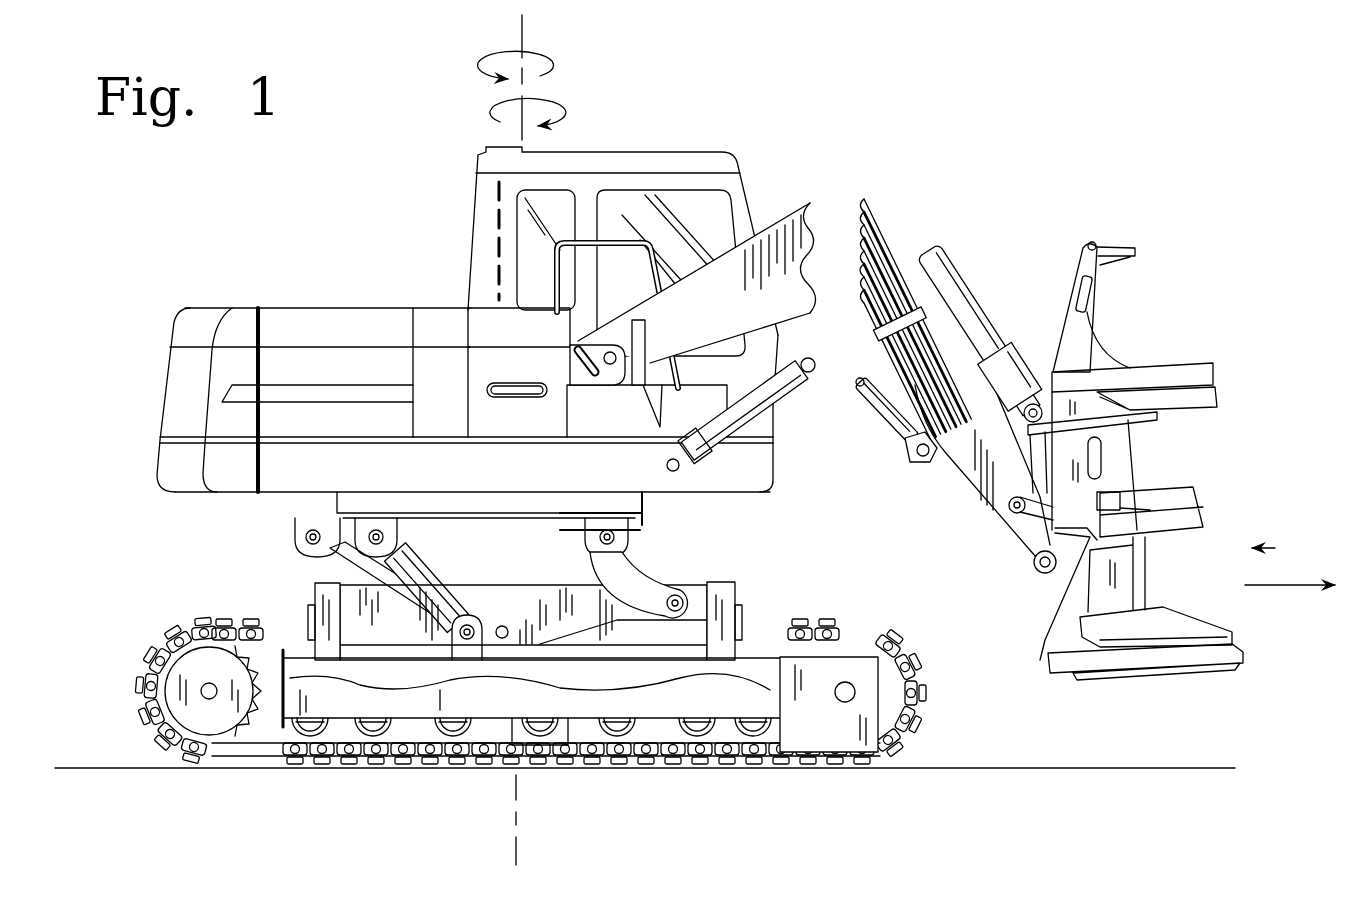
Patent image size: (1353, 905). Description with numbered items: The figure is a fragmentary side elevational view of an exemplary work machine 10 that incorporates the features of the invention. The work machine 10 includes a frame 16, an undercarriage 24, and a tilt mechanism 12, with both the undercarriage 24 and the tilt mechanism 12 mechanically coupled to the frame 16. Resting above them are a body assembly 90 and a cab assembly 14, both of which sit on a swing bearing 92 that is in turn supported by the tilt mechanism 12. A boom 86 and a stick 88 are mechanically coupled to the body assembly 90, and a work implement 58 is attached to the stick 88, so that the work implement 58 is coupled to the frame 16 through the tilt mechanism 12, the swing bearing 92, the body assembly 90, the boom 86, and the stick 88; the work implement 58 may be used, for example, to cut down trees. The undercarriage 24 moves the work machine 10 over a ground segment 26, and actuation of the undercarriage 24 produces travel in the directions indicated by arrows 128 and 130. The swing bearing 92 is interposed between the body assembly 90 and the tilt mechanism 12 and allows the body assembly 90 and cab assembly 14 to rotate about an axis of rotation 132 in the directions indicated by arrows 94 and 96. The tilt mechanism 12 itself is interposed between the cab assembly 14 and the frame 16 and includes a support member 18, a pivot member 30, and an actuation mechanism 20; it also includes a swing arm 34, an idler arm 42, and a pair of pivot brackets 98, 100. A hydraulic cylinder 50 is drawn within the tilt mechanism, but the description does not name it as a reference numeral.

The work machine 10 is at (990, 152).
The tilt mechanism 12 is at (250, 530).
The cab assembly 14 is at (712, 138).
The frame 16 is at (538, 726).
The support member 18 is at (642, 520).
The actuation mechanism 20 is at (255, 572).
The undercarriage 24 is at (852, 785).
The ground segment 26 is at (1040, 766).
The pivot member 30 is at (560, 600).
The swing arm 34 is at (640, 592).
The idler arm 42 is at (335, 558).
The hydraulic tilt cylinder 50 is at (447, 567).
The work implement 58 is at (1237, 435).
The boom 86 is at (812, 205).
The stick 88 is at (1022, 538).
The body assembly 90 is at (335, 280).
The swing bearing 92 is at (337, 500).
The arrow 94 is at (488, 68).
The arrow 96 is at (556, 110).
The pivot bracket 98 is at (720, 582).
The pivot bracket 100 is at (318, 600).
The arrow 128 is at (1294, 519).
The arrow 130 is at (1290, 614).
The axis of rotation 132 is at (526, 30).